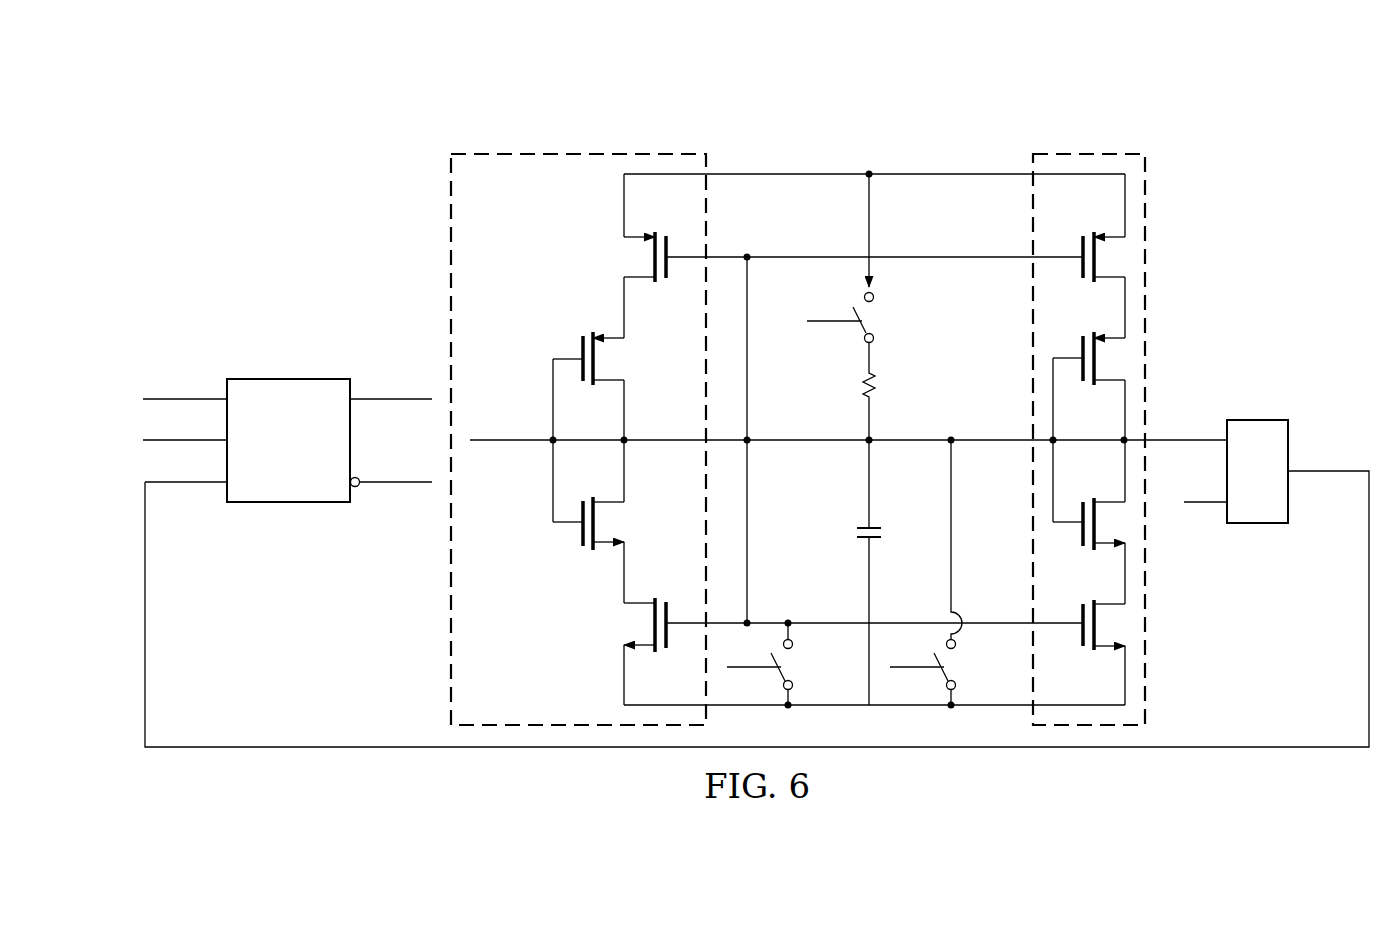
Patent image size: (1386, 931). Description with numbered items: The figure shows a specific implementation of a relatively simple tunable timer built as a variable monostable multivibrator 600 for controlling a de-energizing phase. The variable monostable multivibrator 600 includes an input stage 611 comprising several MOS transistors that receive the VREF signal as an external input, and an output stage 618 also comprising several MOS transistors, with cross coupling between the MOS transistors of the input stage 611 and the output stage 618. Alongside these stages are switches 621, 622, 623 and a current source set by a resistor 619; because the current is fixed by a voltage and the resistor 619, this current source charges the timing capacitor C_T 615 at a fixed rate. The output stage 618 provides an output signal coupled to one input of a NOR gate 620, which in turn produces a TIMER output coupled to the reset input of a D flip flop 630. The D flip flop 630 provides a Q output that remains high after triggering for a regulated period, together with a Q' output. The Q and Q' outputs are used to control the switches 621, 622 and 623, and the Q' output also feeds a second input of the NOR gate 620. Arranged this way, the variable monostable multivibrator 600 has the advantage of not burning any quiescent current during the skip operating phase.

The variable monostable multivibrator 600 is at (266, 119).
The input stage 611 is at (552, 150).
The output stage 618 is at (1114, 150).
The timing capacitor 615 is at (857, 533).
The resistor 619 is at (861, 387).
The NOR gate 620 is at (1256, 524).
The switch 621 is at (793, 680).
The switch 622 is at (878, 331).
The switch 623 is at (958, 680).
The D flip flop 630 is at (286, 379).